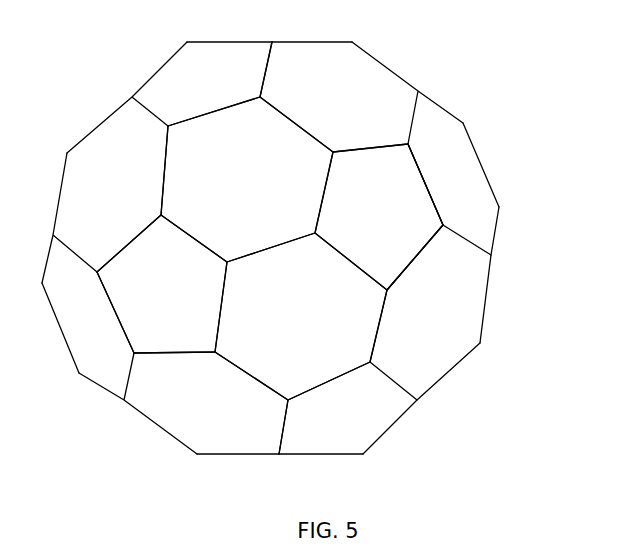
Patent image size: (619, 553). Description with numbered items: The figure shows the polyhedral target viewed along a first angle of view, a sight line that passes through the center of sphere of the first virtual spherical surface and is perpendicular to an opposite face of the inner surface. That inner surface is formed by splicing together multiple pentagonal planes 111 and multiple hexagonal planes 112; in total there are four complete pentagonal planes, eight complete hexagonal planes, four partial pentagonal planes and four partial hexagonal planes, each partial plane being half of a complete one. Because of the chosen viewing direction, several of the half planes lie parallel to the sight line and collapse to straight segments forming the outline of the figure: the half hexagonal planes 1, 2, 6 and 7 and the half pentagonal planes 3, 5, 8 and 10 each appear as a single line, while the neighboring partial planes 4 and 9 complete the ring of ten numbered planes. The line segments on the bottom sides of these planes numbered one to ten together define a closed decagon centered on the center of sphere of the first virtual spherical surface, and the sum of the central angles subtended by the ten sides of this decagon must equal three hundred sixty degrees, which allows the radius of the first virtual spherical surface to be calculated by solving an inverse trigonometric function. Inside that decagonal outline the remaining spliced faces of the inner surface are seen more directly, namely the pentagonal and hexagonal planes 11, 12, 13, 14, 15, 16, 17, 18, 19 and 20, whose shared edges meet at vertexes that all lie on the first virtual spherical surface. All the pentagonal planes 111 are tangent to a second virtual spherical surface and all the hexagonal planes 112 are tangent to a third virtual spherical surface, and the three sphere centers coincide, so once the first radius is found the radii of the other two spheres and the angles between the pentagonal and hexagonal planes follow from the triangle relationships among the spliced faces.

The half hexagonal plane 1 is at (280, 472).
The half hexagonal plane 2 is at (421, 398).
The half pentagonal plane 3 is at (500, 275).
The partial plane 4 is at (453, 189).
The half pentagonal plane 5 is at (407, 93).
The half hexagonal plane 6 is at (269, 29).
The half hexagonal plane 7 is at (127, 97).
The half pentagonal plane 8 is at (65, 218).
The partial plane 9 is at (88, 322).
The half pentagonal plane 10 is at (138, 403).
The eleventh face panel 11 is at (348, 408).
The twelfth face panel 12 is at (410, 293).
The thirteenth face panel 13 is at (379, 217).
The fourteenth face panel 14 is at (334, 97).
The fifteenth face panel 15 is at (220, 84).
The sixteenth face panel 16 is at (131, 199).
The seventeenth face panel 17 is at (162, 284).
The eighteenth face panel 18 is at (211, 403).
The nineteenth face panel 19 is at (301, 316).
The twentieth face panel 20 is at (247, 179).
The pentagonal plane 111 is at (394, 173).
The hexagonal plane 112 is at (348, 307).